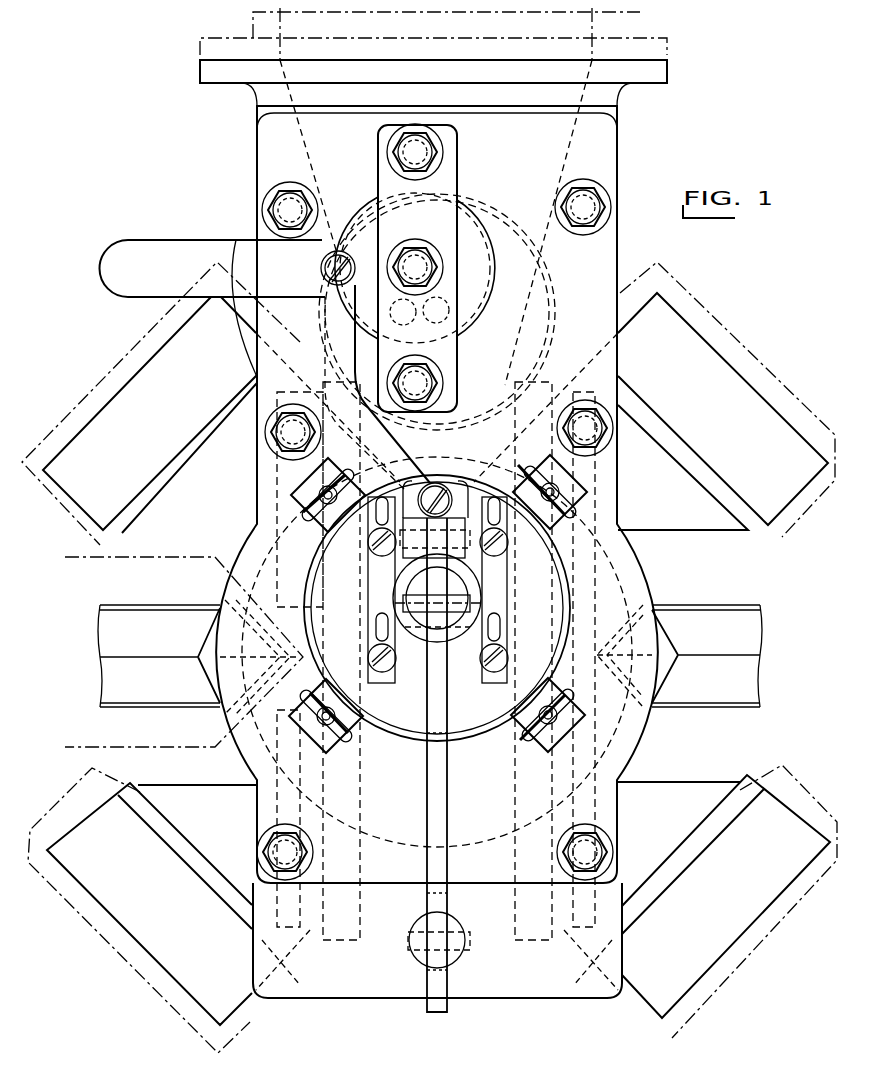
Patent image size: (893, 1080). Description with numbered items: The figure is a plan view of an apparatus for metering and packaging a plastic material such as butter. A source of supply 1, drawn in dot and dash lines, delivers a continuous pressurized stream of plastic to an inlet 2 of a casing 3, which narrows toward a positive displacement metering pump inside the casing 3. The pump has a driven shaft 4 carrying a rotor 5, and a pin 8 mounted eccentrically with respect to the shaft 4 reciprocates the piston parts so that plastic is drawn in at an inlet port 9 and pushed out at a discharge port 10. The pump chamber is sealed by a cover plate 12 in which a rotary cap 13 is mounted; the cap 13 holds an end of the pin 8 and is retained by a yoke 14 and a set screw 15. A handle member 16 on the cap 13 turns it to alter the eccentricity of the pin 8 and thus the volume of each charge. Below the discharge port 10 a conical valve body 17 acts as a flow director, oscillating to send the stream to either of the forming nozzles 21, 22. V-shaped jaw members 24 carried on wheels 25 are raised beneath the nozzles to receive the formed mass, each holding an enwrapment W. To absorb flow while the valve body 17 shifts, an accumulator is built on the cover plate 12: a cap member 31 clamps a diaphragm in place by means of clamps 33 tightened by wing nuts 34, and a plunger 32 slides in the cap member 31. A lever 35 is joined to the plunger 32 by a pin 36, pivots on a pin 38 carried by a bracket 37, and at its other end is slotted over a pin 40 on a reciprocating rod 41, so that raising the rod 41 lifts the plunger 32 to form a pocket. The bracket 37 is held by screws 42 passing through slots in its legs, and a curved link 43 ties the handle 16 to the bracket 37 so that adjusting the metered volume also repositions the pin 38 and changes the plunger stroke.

The source of supply 1 is at (600, 22).
The inlet 2 is at (590, 70).
The casing 3 is at (513, 990).
The driven shaft 4 is at (415, 272).
The rotor 5 is at (553, 283).
The pin 8 is at (390, 315).
The inlet port 9 is at (548, 216).
The discharge port 10 is at (437, 325).
The cover plate 12 is at (600, 132).
The cap 13 is at (488, 280).
The yoke 14 is at (458, 350).
The set screw 15 is at (426, 246).
The handle member 16 is at (166, 250).
The conical valve body 17 is at (645, 596).
The forming nozzle 21 is at (668, 670).
The forming nozzle 22 is at (206, 658).
The jaw members 24 is at (200, 408).
The wheels 25 is at (345, 945).
The cap member 31 is at (404, 717).
The plunger 32 is at (398, 613).
The clamps 33 is at (292, 492).
The wing nuts 34 is at (310, 504).
The lever 35 is at (446, 826).
The pin 36 is at (402, 603).
The bracket 37 is at (500, 588).
The pin 38 is at (485, 551).
The pin 40 is at (408, 948).
The reciprocating rod 41 is at (424, 956).
The screws 42 is at (378, 552).
The curved link 43 is at (330, 312).
The enwrapment W is at (75, 543).